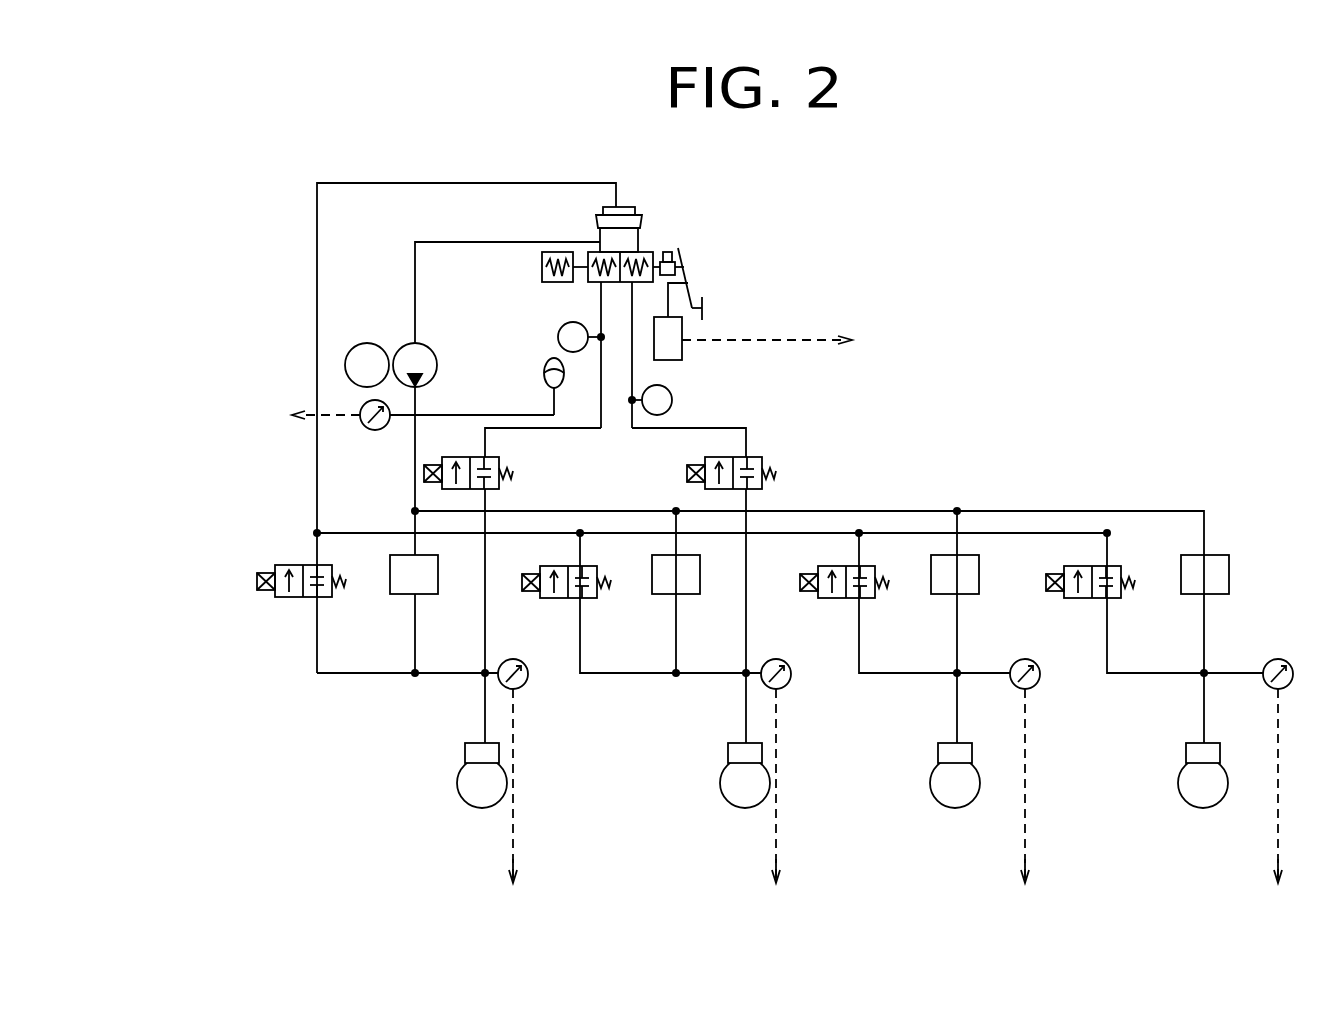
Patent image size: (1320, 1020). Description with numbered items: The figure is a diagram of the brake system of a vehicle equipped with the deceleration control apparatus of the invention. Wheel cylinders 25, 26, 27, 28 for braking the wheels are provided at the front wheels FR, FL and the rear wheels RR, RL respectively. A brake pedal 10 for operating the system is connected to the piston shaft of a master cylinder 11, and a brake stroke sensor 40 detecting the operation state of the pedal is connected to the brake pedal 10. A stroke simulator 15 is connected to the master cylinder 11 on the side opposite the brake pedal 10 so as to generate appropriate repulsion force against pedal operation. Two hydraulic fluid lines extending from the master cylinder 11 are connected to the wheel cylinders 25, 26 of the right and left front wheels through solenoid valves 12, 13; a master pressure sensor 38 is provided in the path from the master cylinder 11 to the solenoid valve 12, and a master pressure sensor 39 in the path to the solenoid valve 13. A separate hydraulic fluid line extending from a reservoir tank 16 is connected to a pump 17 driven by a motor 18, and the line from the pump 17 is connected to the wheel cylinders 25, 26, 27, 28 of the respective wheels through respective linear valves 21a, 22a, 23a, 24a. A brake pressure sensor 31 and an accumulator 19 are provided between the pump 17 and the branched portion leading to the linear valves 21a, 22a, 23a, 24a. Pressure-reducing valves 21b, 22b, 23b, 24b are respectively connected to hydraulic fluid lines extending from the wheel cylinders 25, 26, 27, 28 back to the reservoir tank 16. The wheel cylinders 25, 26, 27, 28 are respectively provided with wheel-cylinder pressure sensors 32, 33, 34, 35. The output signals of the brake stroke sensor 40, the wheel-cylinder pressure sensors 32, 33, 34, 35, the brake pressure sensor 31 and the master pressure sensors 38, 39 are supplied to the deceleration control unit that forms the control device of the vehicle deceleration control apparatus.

The brake pedal 10 is at (693, 270).
The master cylinder 11 is at (596, 283).
The solenoid valve 12 is at (500, 462).
The solenoid valve 13 is at (766, 460).
The stroke simulator 15 is at (542, 275).
The reservoir tank 16 is at (645, 217).
The pump 17 is at (436, 352).
The motor 18 is at (367, 343).
The accumulator 19 is at (544, 378).
The linear valve 21a is at (382, 588).
The pressure-reducing valve 21b is at (283, 597).
The linear valve 22a is at (662, 594).
The pressure-reducing valve 22b is at (560, 598).
The linear valve 23a is at (940, 594).
The pressure-reducing valve 23b is at (840, 598).
The linear valve 24a is at (1186, 594).
The pressure-reducing valve 24b is at (1083, 598).
The wheel cylinder 25 is at (465, 752).
The wheel cylinder 26 is at (728, 752).
The wheel cylinder 27 is at (938, 752).
The wheel cylinder 28 is at (1188, 755).
The brake pressure sensor 31 is at (372, 430).
The wheel-cylinder pressure sensor 32 is at (528, 680).
The wheel-cylinder pressure sensor 33 is at (792, 680).
The wheel-cylinder pressure sensor 34 is at (1040, 688).
The wheel-cylinder pressure sensor 35 is at (1280, 659).
The master pressure sensor 38 is at (558, 337).
The master pressure sensor 39 is at (672, 400).
The brake stroke sensor 40 is at (682, 352).